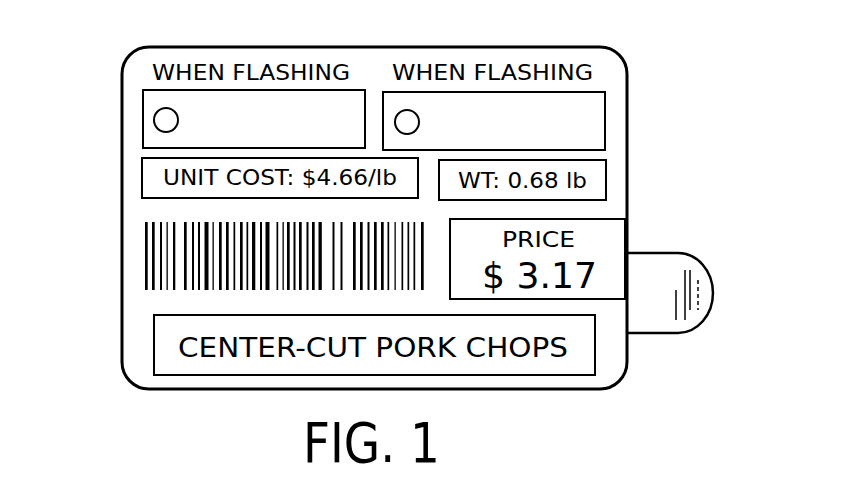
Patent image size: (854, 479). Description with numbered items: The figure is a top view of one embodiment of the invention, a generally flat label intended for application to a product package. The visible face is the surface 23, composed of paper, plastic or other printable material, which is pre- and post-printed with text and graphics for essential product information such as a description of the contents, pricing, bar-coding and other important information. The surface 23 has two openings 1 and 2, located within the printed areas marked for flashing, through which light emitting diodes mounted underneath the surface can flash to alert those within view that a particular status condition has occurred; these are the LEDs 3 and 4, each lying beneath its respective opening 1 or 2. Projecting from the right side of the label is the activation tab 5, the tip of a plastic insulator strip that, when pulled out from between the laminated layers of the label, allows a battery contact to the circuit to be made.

The opening 1 is at (155, 125).
The opening 2 is at (399, 114).
The LED 3 is at (156, 114).
The LED 4 is at (405, 110).
The activation tab 5 is at (700, 292).
The surface 23 is at (137, 312).